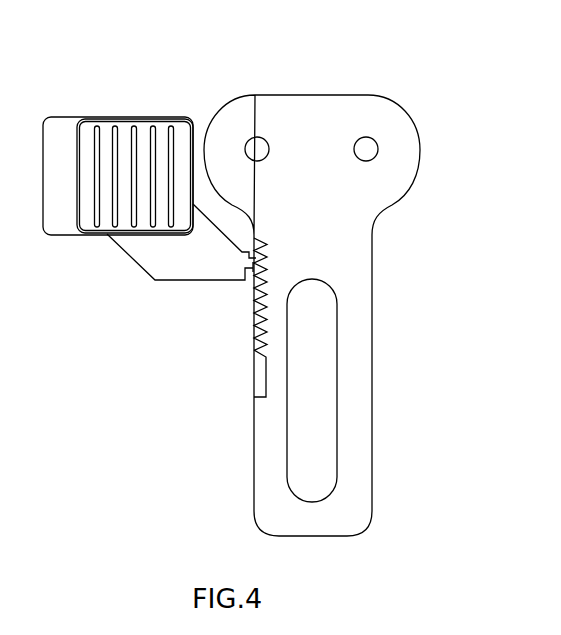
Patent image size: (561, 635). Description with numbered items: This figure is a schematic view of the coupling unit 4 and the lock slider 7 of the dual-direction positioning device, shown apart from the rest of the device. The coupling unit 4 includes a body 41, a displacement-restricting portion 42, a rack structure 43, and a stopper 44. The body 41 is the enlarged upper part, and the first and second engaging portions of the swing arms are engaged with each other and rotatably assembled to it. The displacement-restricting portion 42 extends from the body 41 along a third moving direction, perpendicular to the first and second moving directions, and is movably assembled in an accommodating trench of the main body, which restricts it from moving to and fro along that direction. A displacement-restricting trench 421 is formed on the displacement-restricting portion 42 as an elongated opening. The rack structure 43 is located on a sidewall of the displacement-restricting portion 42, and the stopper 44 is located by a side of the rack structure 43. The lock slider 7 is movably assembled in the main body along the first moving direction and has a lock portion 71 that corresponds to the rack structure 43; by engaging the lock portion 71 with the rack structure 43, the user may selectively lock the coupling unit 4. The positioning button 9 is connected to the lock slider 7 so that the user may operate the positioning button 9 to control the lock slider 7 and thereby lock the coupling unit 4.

The coupling unit 4 is at (333, 288).
The body 41 is at (415, 145).
The displacement-restricting portion 42 is at (313, 385).
The displacement-restricting trench 421 is at (330, 428).
The rack structure 43 is at (253, 322).
The stopper 44 is at (253, 375).
The lock slider 7 is at (152, 261).
The lock portion 71 is at (252, 272).
The positioning button 9 is at (125, 132).